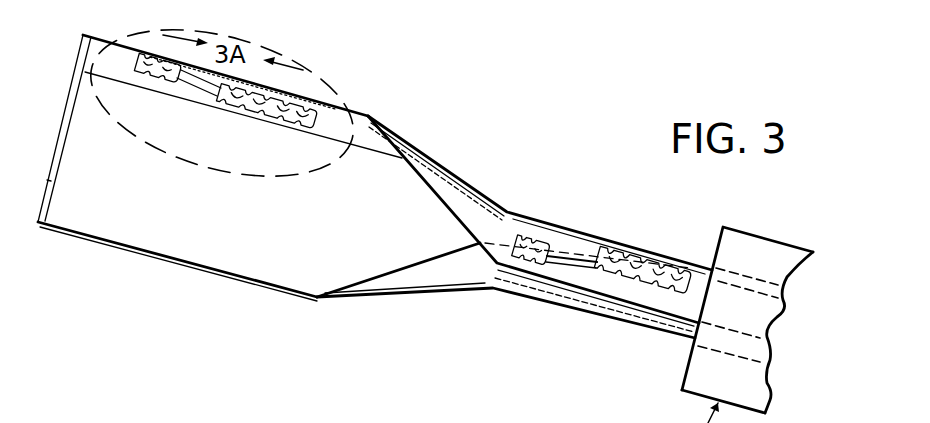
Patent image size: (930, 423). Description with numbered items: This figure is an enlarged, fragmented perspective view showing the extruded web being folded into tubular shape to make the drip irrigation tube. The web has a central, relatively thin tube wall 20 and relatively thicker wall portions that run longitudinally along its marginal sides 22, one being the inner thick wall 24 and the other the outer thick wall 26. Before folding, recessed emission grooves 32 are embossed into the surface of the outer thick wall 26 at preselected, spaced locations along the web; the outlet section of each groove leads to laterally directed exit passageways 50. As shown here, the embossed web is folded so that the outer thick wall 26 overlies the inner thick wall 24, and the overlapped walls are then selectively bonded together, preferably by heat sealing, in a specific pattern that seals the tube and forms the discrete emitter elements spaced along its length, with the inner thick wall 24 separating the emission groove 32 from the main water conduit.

The tube wall 20 is at (203, 203).
The marginal sides 22 is at (438, 197).
The inner thick wall 24 is at (276, 268).
The outer thick wall 26 is at (364, 130).
The emission grooves 32 is at (300, 97).
The exit passageways 50 is at (160, 422).